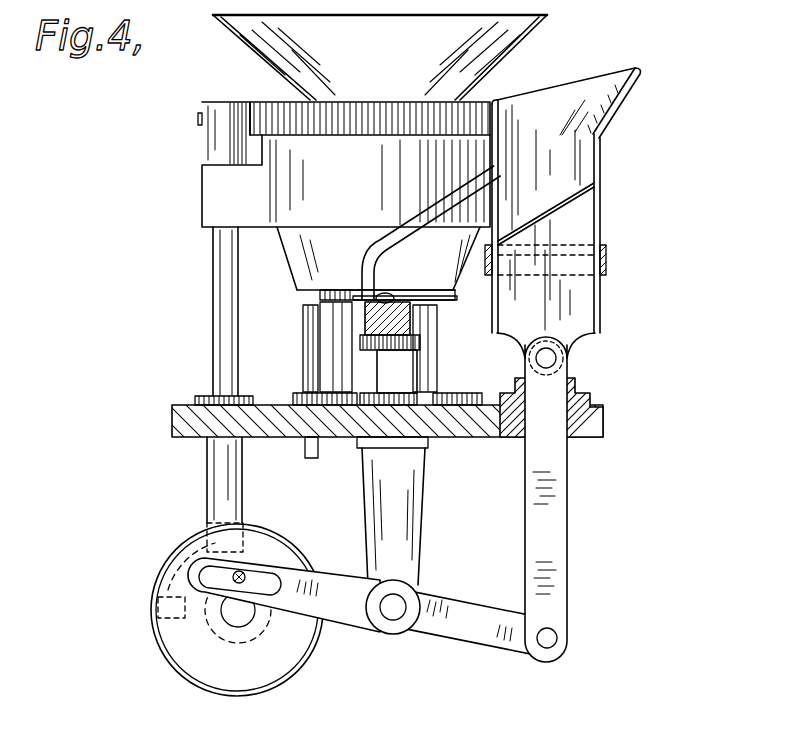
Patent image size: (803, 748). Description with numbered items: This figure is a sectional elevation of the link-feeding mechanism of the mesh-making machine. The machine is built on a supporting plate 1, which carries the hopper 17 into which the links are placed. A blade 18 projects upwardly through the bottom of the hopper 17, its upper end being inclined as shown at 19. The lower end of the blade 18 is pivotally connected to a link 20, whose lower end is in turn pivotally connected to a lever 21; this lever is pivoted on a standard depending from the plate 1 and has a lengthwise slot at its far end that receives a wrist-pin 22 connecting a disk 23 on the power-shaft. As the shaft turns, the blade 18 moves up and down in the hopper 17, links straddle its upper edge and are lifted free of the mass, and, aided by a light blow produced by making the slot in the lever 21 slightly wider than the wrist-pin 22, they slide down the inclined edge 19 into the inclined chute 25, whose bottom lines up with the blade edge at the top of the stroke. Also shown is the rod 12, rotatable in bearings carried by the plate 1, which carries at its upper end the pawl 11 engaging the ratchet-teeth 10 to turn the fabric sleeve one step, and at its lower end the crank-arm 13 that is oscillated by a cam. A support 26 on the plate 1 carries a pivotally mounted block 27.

The supporting plate 1 is at (174, 420).
The ratchet-teeth 10 is at (334, 136).
The pawl 11 is at (249, 103).
The rod 12 is at (213, 270).
The crank-arm 13 is at (158, 608).
The hopper 17 is at (597, 122).
The blade 18 is at (583, 218).
The inclined upper end 19 is at (562, 207).
The link 20 is at (565, 480).
The lever 21 is at (445, 598).
The wrist-pin 22 is at (242, 576).
The disk 23 is at (309, 659).
The chute 25 is at (464, 185).
The support 26 is at (397, 371).
The block 27 is at (395, 306).